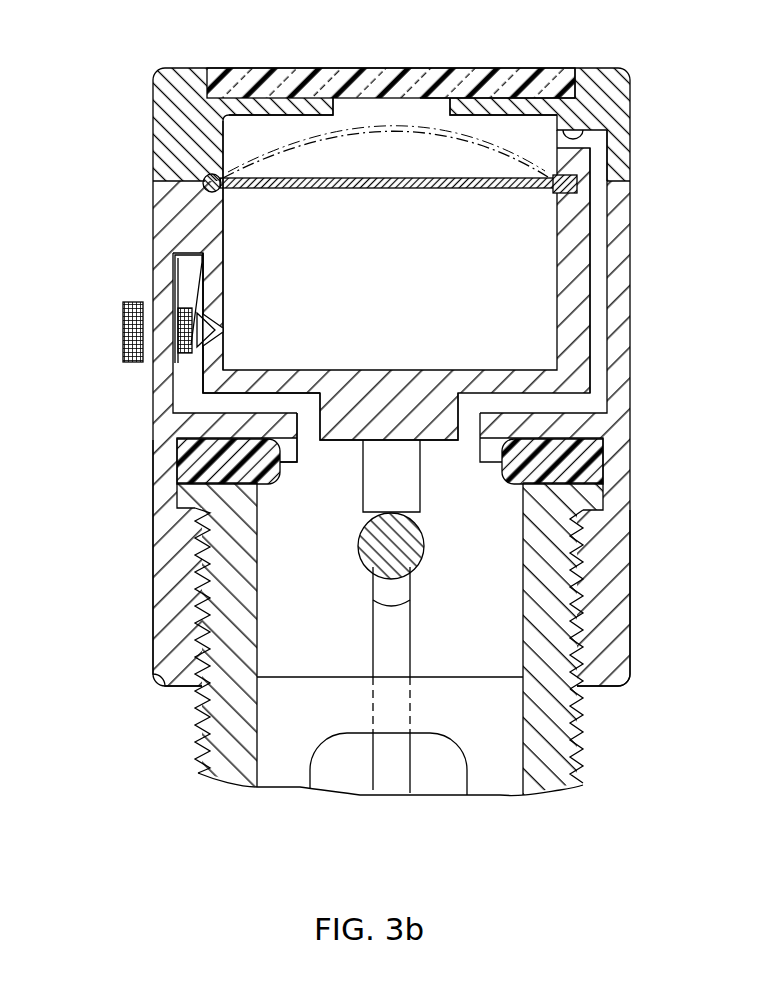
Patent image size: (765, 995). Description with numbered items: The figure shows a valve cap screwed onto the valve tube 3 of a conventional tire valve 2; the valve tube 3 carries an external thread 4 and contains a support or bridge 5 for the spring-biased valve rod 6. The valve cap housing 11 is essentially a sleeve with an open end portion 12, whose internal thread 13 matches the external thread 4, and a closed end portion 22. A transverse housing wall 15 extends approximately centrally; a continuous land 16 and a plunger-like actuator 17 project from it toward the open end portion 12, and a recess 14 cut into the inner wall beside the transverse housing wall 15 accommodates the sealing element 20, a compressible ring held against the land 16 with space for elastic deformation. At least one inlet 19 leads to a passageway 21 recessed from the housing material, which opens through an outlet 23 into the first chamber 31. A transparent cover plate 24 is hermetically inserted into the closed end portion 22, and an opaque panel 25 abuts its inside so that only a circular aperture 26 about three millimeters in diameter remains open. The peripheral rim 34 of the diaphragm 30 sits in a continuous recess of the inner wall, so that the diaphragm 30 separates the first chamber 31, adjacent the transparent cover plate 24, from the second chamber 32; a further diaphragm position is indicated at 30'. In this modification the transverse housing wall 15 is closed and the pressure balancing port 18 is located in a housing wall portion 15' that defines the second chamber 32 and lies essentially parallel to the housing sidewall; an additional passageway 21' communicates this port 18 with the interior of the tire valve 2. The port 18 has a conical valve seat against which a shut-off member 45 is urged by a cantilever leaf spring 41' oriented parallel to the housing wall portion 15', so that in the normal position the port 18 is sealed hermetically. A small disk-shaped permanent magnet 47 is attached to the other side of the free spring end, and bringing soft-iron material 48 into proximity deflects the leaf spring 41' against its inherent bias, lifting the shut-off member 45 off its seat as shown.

The tire valve 2 is at (298, 798).
The valve tube 3 is at (545, 774).
The external thread 4 is at (582, 720).
The support or bridge 5 is at (453, 690).
The valve rod 6 is at (407, 582).
The valve cap housing 11 is at (620, 348).
The open end portion 12 is at (613, 592).
The internal thread 13 is at (574, 643).
The recess 14 is at (178, 507).
The transverse housing wall 15 is at (381, 294).
The housing wall portion 15' is at (248, 287).
The continuous land 16 is at (297, 452).
The plunger-like actuator 17 is at (416, 488).
The port 18 is at (232, 331).
The inlet 19 is at (465, 432).
The sealing element 20 is at (207, 470).
The passageway 21 is at (582, 271).
The additional passageway 21' is at (211, 344).
The closed end portion 22 is at (617, 127).
The outlet 23 is at (585, 127).
The transparent cover plate 24 is at (527, 88).
The opaque panel 25 is at (468, 106).
The circular aperture 26 is at (352, 100).
The diaphragm 30 is at (398, 204).
The deflected diaphragm position 30' is at (385, 152).
The first chamber 31 is at (248, 140).
The second chamber 32 is at (300, 248).
The peripheral rim 34 is at (205, 181).
The leaf spring 41' is at (151, 304).
The shut-off member 45 is at (217, 340).
The permanent magnet 47 is at (181, 344).
The soft-iron material 48 is at (124, 324).